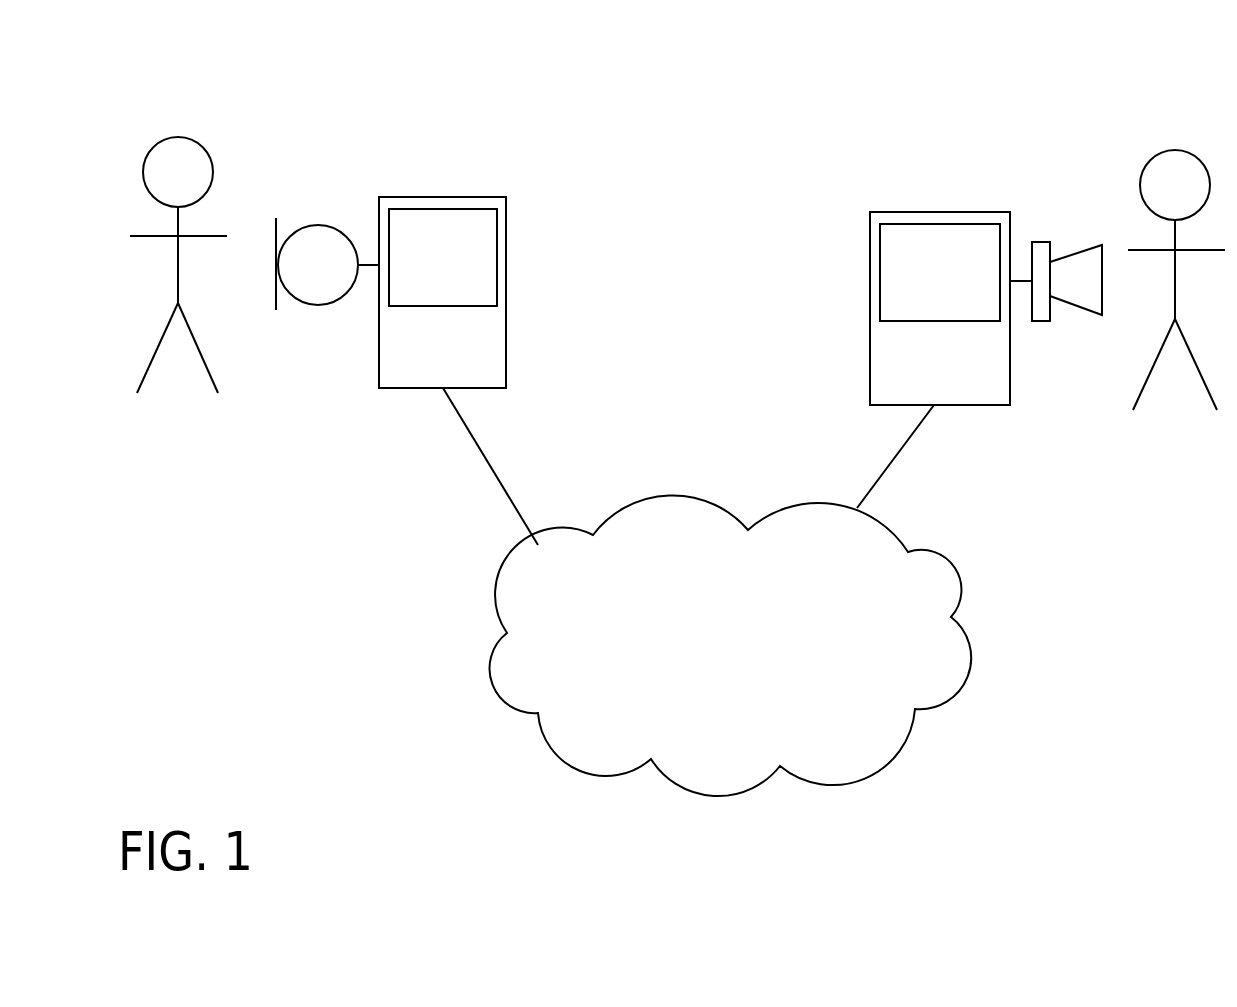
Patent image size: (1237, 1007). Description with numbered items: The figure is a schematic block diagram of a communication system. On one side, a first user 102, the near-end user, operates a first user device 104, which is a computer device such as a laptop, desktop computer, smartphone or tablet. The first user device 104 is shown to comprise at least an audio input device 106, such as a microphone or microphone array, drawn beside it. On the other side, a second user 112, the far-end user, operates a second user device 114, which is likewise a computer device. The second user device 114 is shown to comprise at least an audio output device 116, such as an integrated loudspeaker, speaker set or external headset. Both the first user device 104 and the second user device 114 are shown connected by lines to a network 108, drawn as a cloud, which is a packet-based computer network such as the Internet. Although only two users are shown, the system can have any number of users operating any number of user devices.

The first user 102 is at (180, 143).
The first user device 104 is at (453, 200).
The audio input device 106 is at (318, 226).
The network 108 is at (683, 505).
The second user 112 is at (1175, 158).
The second user device 114 is at (943, 217).
The audio output device 116 is at (1082, 255).